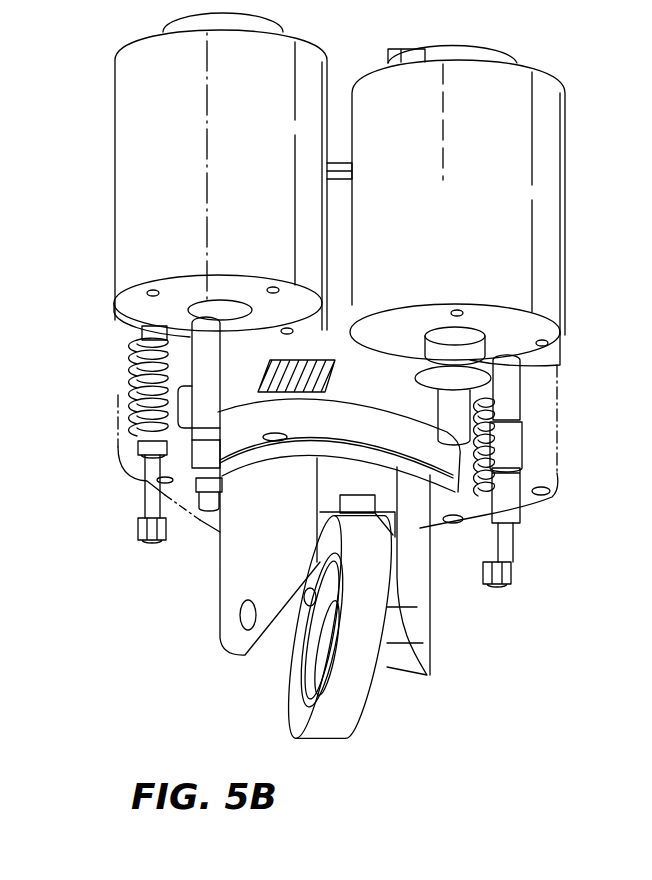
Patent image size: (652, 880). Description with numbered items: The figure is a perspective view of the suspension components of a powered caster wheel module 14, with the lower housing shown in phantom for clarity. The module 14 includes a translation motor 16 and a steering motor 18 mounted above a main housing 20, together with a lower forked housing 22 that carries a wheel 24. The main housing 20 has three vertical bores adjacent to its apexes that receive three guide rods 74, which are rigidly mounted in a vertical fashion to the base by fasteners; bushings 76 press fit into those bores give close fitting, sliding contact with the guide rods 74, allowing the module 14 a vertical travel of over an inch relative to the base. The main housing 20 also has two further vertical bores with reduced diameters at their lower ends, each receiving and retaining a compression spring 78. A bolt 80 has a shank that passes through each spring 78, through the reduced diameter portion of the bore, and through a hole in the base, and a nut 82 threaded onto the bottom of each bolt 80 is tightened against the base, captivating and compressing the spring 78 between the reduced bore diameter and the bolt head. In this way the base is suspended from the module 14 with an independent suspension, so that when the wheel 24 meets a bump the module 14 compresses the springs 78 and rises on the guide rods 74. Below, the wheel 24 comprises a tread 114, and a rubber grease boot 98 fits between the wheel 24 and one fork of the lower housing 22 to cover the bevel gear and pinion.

The powered caster wheel module 14 is at (82, 452).
The translation motor 16 is at (550, 190).
The steering motor 18 is at (118, 190).
The main housing 20 is at (560, 372).
The lower forked housing 22 is at (214, 590).
The wheel 24 is at (327, 644).
The guide rod 74 is at (126, 305).
The bushing 76 is at (275, 414).
The compression spring 78 is at (134, 392).
The bolt 80 is at (138, 340).
The nut 82 is at (132, 527).
The rubber grease boot 98 is at (290, 672).
The tread 114 is at (356, 720).